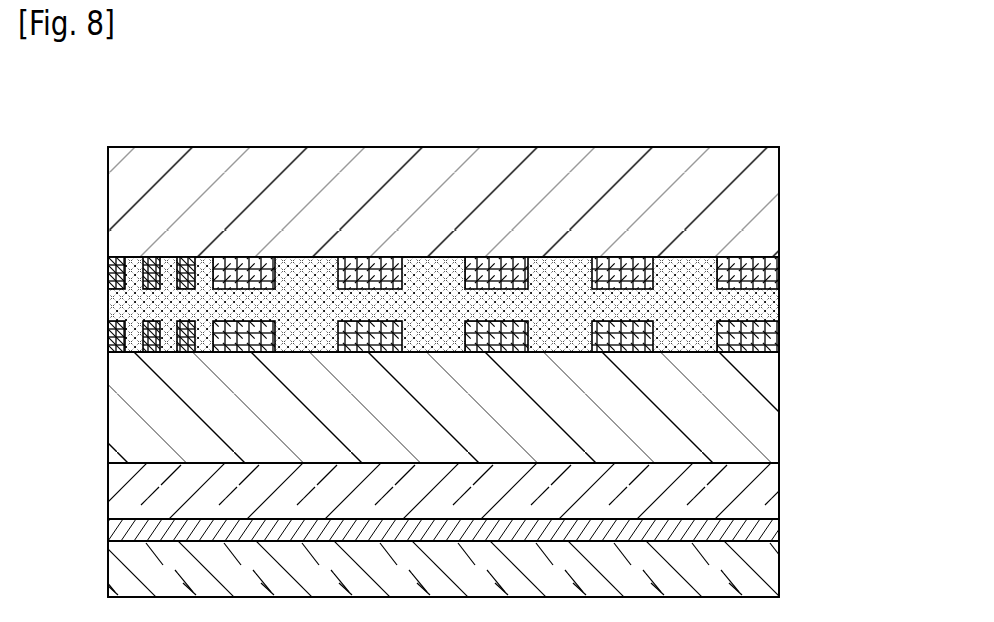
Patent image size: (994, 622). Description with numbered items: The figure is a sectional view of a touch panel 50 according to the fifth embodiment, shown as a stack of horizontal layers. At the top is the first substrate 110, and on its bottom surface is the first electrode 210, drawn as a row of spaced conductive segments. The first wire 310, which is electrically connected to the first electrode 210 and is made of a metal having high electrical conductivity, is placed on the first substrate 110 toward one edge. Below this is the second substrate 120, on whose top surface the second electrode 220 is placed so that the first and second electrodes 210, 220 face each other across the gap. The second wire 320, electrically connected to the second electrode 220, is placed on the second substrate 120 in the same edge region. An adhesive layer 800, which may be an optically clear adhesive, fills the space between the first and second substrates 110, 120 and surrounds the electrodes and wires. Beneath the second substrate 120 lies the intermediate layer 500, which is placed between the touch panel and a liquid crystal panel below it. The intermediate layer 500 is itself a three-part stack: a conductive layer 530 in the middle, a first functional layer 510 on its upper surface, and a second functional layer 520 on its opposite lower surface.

The touch sensor / display device 50 is at (143, 104).
The first substrate 110 is at (775, 208).
The second substrate 120 is at (775, 400).
The first electrode 210 is at (775, 272).
The second electrode 220 is at (775, 330).
The first wire 310 is at (107, 275).
The second wire 320 is at (107, 340).
The adhesive layer 800 is at (107, 304).
The intermediate layer 500 is at (508, 530).
The first functional layer 510 is at (775, 488).
The conductive layer 530 is at (775, 529).
The second functional layer 520 is at (775, 565).